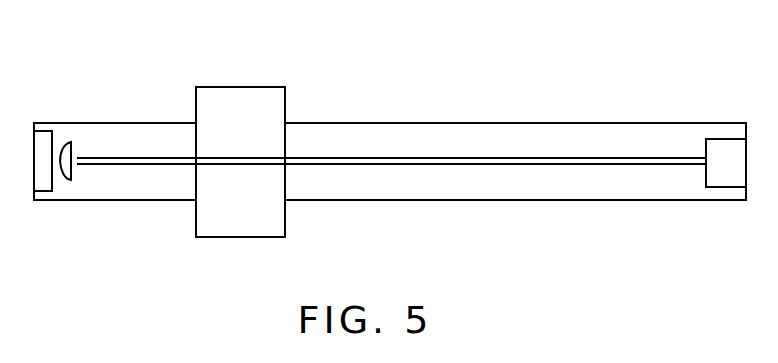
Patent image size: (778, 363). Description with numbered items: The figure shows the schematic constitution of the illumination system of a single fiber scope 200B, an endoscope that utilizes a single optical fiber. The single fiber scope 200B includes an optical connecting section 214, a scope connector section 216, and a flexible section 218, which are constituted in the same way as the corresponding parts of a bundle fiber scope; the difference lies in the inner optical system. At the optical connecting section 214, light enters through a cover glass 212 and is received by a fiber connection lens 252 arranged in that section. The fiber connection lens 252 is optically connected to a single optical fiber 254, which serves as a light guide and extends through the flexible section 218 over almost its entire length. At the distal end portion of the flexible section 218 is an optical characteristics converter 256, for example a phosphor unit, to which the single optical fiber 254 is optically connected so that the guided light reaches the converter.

The single fiber scope 200B is at (598, 106).
The cover glass 212 is at (34, 191).
The optical connecting section 214 is at (117, 123).
The scope connector section 216 is at (241, 87).
The flexible section 218 is at (466, 123).
The fiber connection lens 252 is at (67, 180).
The single optical fiber 254 is at (509, 166).
The optical characteristics converter 256 is at (726, 187).